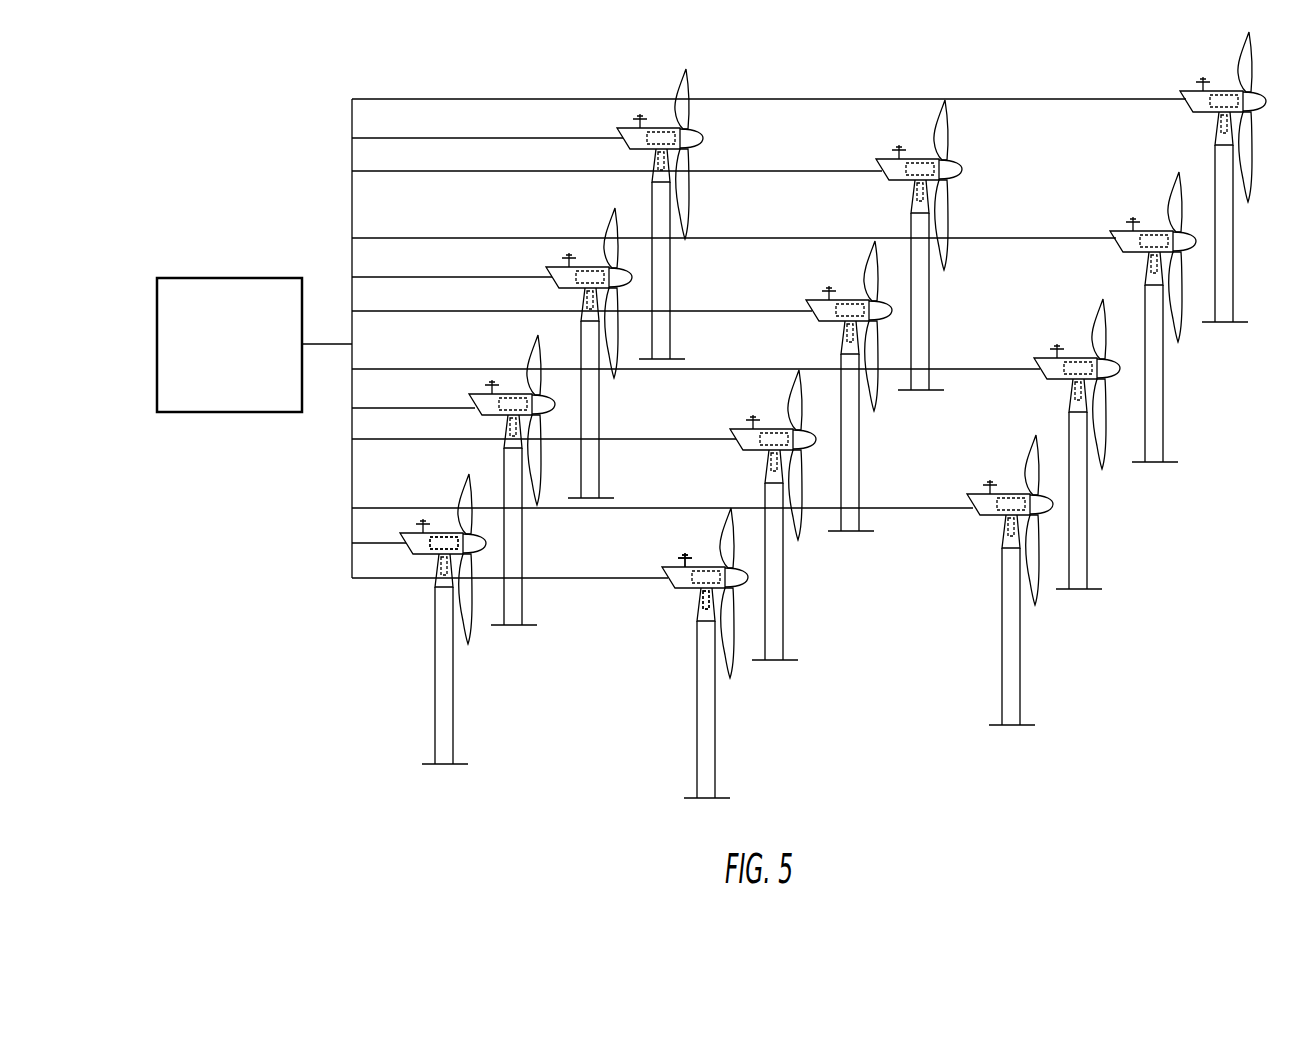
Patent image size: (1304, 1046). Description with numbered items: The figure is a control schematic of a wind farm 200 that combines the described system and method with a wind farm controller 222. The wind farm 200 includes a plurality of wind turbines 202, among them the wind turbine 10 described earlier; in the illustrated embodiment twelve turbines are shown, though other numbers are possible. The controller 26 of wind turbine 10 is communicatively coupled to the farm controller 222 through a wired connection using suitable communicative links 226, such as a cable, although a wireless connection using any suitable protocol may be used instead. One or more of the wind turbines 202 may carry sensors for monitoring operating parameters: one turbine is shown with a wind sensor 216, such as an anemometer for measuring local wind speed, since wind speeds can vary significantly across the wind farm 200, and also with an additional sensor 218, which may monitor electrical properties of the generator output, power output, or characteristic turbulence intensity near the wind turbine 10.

The wind farm 200 is at (283, 165).
The wind turbines 202 is at (525, 568).
The wind turbine 10 is at (458, 718).
The wind farm controller 222 is at (249, 357).
The communicative links 226 is at (500, 238).
The controller 26 is at (445, 535).
The wind sensor 216 is at (683, 557).
The additional sensor 218 is at (693, 602).